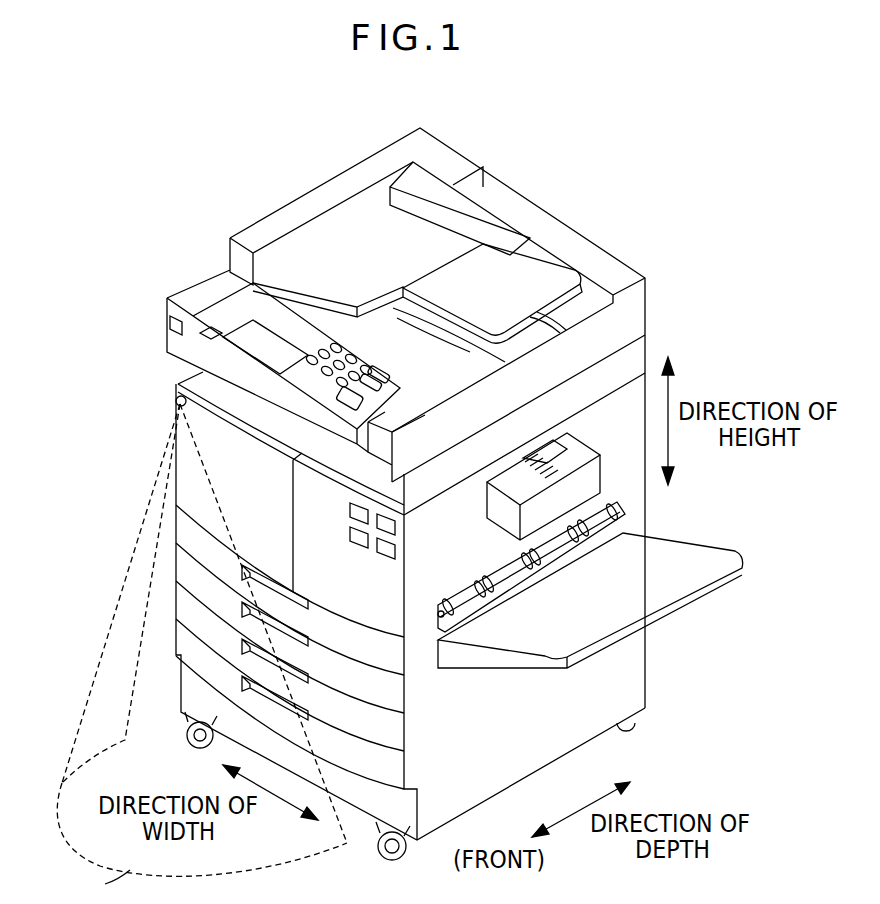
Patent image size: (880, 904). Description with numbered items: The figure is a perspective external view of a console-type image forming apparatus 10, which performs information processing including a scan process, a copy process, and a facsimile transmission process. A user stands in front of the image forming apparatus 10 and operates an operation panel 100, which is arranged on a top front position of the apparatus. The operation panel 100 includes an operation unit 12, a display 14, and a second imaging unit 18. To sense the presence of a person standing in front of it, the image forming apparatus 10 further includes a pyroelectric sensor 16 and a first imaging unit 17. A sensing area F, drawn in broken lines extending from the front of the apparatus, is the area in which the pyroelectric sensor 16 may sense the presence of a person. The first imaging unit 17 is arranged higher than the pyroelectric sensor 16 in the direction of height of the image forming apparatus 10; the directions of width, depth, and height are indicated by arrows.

The image forming apparatus 10 is at (562, 207).
The operation unit 12 is at (313, 353).
The display 14 is at (222, 333).
The pyroelectric sensor 16 is at (174, 402).
The first imaging unit 17 is at (168, 327).
The second imaging unit 18 is at (222, 297).
The operation panel 100 is at (197, 322).